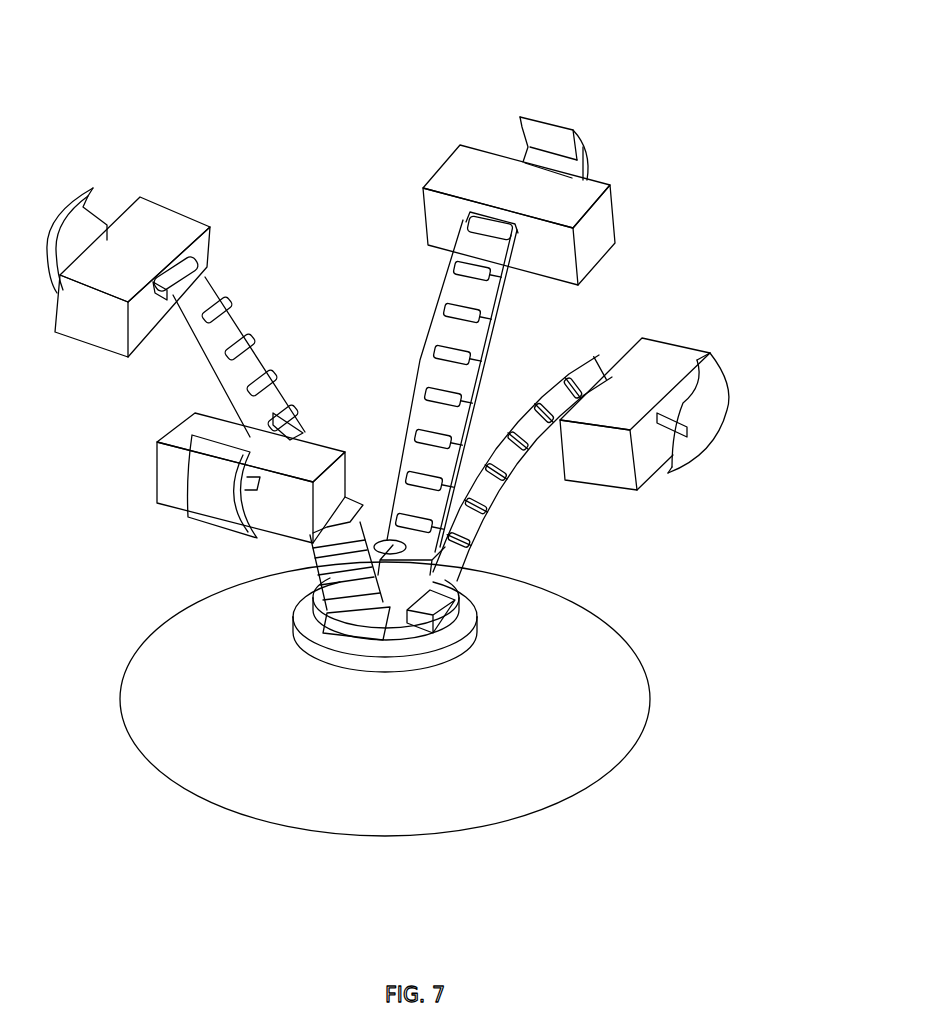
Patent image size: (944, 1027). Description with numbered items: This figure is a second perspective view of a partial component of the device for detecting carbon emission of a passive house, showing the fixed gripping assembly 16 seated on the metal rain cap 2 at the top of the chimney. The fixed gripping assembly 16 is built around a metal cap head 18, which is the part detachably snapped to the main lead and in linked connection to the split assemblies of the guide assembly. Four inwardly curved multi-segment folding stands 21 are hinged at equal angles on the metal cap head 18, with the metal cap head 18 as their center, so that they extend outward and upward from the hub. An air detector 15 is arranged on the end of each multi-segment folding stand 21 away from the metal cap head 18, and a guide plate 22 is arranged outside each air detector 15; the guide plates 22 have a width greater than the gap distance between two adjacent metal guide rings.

The metal rain cap 2 is at (513, 670).
The air detector 15 is at (627, 398).
The fixed gripping assembly 16 is at (592, 542).
The metal cap head 18 is at (357, 657).
The multi-segment folding stand 21 is at (443, 303).
The guide plate 22 is at (705, 408).